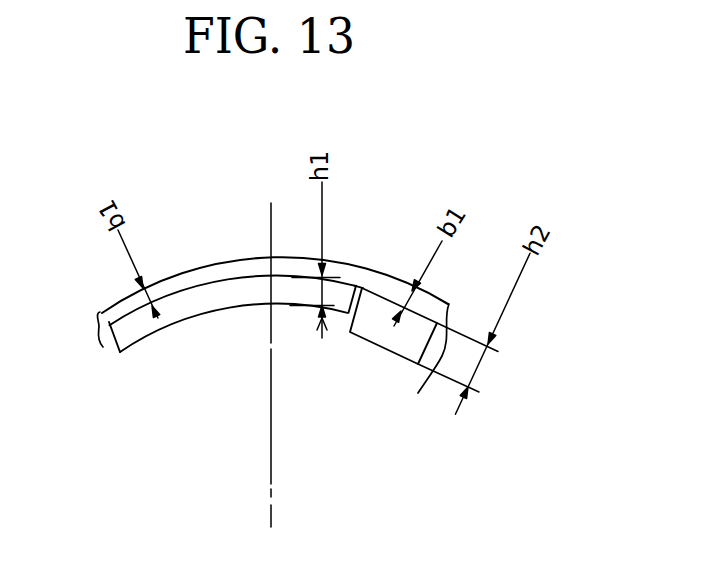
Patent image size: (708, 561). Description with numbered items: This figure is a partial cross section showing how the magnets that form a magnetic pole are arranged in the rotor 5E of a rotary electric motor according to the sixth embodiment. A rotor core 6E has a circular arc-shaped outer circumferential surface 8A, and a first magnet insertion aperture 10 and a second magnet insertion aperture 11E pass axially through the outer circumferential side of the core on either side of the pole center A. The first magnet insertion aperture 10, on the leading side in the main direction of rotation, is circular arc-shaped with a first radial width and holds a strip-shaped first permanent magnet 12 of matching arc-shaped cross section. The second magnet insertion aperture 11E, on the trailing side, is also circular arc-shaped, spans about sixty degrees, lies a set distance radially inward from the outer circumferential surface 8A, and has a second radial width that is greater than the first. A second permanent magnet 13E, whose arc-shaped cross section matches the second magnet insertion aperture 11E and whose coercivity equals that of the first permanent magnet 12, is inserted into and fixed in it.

The rotor 5E is at (180, 104).
The rotor core 6E is at (97, 303).
The circular arc-shaped outer circumferential surface 8A is at (239, 263).
The first magnet insertion aperture 10 is at (217, 280).
The second magnet insertion aperture 11E is at (423, 313).
The first permanent magnet 12 is at (137, 317).
The second permanent magnet 13E is at (378, 303).
The pole center A is at (271, 440).